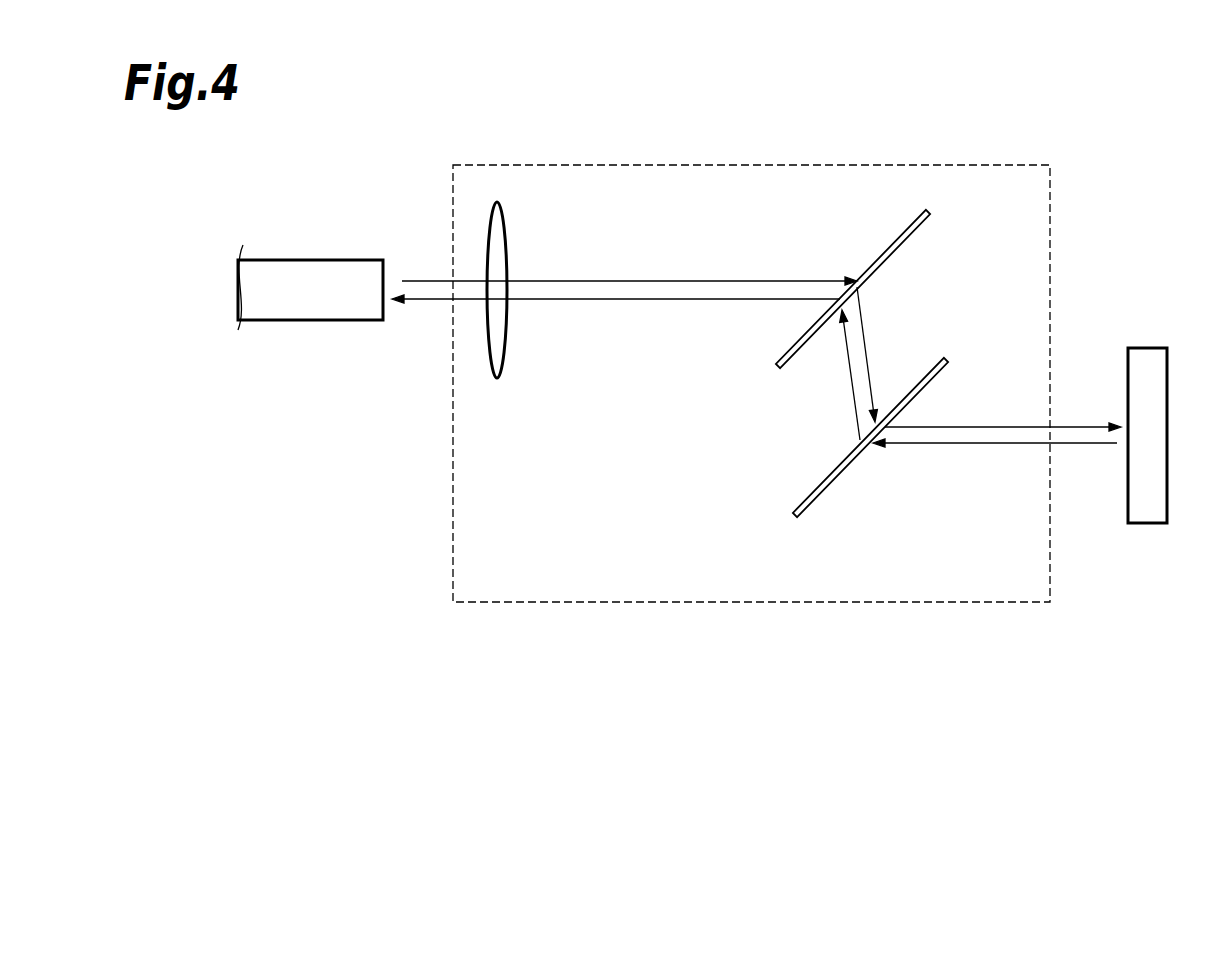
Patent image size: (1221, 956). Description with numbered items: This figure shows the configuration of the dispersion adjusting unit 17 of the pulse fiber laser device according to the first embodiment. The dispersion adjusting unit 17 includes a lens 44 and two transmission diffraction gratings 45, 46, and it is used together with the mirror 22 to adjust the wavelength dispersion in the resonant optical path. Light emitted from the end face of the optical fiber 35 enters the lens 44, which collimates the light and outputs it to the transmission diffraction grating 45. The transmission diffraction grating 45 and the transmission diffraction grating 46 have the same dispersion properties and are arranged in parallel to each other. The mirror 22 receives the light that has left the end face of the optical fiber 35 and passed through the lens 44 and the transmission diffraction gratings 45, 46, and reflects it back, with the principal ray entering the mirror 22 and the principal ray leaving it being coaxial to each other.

The dispersion adjusting unit 17 is at (483, 602).
The optical fiber 35 is at (293, 298).
The lens 44 is at (498, 342).
The transmission diffraction grating 45 is at (777, 351).
The transmission diffraction grating 46 is at (810, 490).
The mirror 22 is at (1147, 508).